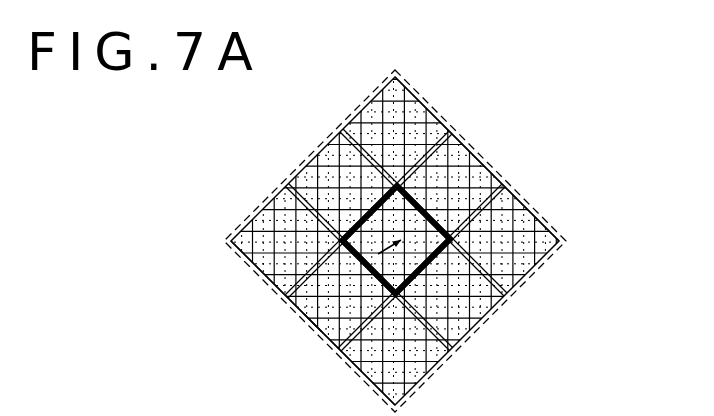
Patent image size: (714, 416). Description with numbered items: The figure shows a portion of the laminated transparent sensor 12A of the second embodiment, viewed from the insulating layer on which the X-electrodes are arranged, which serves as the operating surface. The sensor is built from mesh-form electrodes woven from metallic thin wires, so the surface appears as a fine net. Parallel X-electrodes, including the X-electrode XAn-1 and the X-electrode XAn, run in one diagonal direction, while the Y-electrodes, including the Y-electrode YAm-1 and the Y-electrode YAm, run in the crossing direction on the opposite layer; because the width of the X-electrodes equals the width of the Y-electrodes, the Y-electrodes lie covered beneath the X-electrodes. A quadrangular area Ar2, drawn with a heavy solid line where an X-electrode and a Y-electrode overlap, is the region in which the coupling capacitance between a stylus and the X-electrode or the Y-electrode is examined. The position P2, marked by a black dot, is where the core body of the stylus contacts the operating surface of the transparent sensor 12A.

The transparent sensor 12A is at (243, 262).
The X-electrode XAn-1 is at (408, 84).
The X-electrode XAn is at (455, 141).
The Y-electrode YAm-1 is at (377, 323).
The Y-electrode YAm is at (415, 268).
The quadrangular area Ar2 is at (333, 160).
The position P2 is at (313, 325).